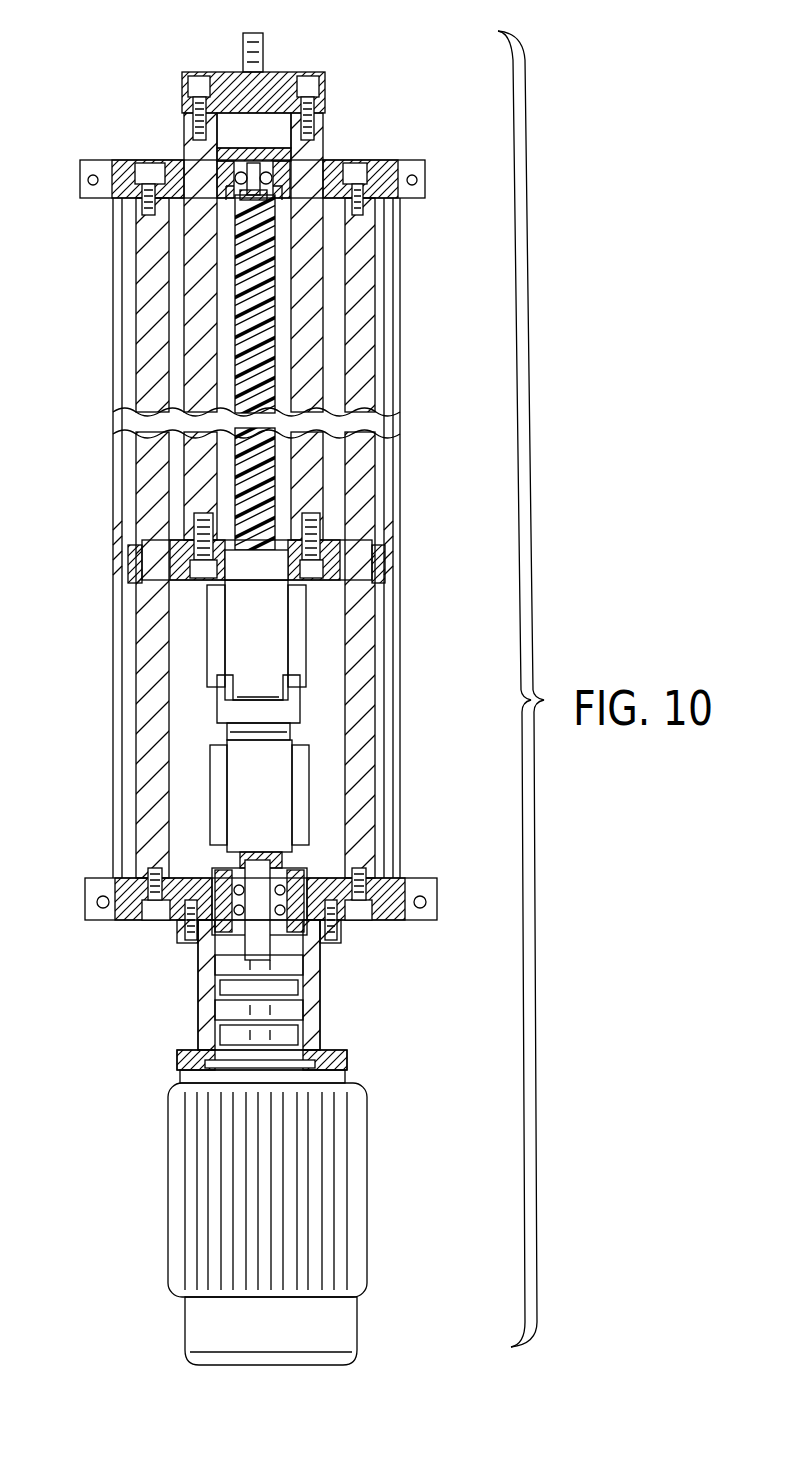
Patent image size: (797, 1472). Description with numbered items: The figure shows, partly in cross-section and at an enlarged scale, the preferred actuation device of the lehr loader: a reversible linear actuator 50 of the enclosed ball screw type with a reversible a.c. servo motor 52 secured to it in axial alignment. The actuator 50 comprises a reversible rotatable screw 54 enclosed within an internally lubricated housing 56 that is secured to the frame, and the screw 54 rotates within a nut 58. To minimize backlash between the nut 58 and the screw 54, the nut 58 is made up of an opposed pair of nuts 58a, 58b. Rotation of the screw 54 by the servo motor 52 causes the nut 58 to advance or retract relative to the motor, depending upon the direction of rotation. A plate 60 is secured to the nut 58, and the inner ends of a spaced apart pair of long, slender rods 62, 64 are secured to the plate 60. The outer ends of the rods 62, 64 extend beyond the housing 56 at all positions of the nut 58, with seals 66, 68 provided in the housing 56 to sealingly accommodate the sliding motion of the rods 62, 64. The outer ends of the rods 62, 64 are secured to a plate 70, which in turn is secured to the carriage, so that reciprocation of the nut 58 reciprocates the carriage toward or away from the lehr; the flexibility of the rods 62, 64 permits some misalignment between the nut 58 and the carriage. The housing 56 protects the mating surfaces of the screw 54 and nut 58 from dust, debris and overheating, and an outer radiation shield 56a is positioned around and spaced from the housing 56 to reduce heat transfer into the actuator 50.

The linear actuator 50 is at (113, 487).
The servo motor 52 is at (168, 1222).
The rotatable screw 54 is at (256, 304).
The housing 56 is at (398, 489).
The outer radiation shield 56a is at (398, 438).
The nut 58 is at (290, 637).
The nut 58a is at (250, 637).
The nut 58b is at (250, 793).
The plate 60 is at (333, 557).
The rod 62 is at (312, 402).
The rod 64 is at (205, 373).
The seal 66 is at (327, 150).
The seal 68 is at (180, 165).
The plate 70 is at (283, 72).